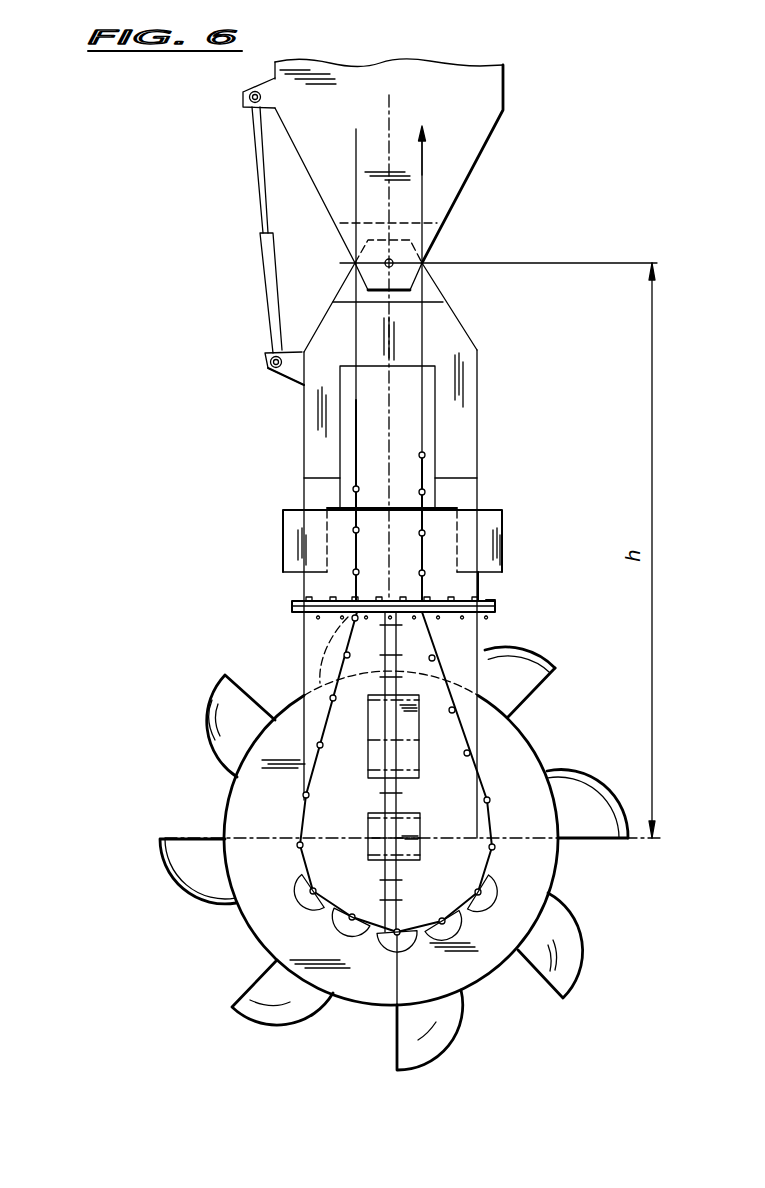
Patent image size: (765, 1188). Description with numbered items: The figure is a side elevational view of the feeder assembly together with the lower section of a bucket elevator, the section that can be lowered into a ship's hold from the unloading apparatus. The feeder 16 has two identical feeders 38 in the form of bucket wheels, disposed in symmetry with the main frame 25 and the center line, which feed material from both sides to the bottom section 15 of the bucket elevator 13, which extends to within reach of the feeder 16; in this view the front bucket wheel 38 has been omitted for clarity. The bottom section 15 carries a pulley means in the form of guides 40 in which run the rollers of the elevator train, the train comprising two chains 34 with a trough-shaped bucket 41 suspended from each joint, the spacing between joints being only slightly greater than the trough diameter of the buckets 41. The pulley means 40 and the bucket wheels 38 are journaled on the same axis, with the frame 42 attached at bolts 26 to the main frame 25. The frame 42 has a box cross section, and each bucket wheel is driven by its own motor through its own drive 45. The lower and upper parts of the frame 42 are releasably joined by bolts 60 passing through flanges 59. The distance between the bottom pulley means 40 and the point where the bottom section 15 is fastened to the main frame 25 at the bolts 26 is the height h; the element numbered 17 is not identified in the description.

The bucket elevator 13 is at (440, 164).
The bottom section of the bucket elevator 15 is at (473, 632).
The feeder 16 is at (243, 945).
The hydraulic cylinder 17 is at (262, 254).
The main frame 25 is at (467, 112).
The bolts 26 is at (412, 257).
The chains 34 is at (532, 682).
The feeder in the form of a bucket wheel 38 is at (587, 793).
The pulley means in the form of guides 40 is at (467, 823).
The trough-shaped bucket 41 is at (403, 948).
The frame 42 is at (305, 647).
The drive 45 is at (430, 422).
The flanges 59 is at (292, 612).
The bolts 60 is at (488, 597).